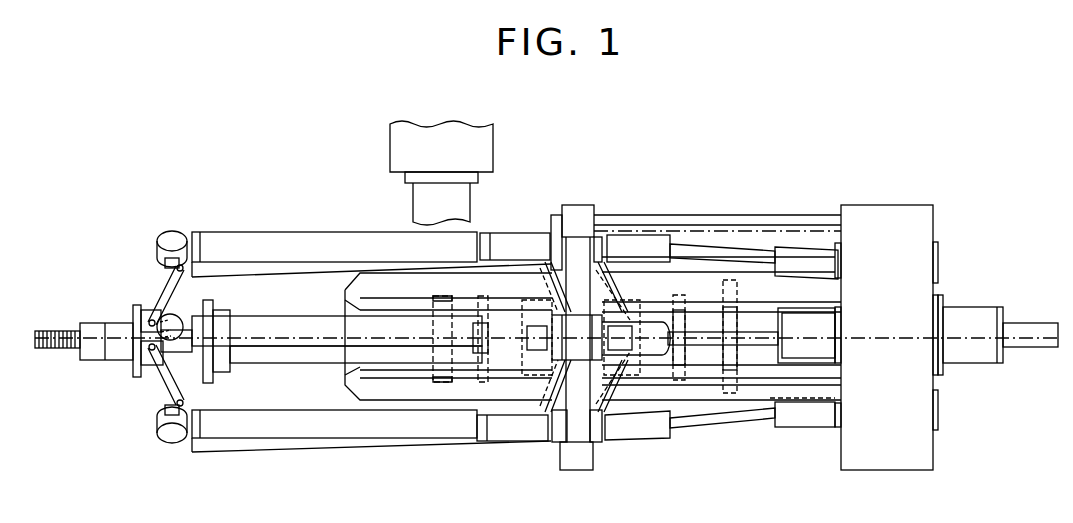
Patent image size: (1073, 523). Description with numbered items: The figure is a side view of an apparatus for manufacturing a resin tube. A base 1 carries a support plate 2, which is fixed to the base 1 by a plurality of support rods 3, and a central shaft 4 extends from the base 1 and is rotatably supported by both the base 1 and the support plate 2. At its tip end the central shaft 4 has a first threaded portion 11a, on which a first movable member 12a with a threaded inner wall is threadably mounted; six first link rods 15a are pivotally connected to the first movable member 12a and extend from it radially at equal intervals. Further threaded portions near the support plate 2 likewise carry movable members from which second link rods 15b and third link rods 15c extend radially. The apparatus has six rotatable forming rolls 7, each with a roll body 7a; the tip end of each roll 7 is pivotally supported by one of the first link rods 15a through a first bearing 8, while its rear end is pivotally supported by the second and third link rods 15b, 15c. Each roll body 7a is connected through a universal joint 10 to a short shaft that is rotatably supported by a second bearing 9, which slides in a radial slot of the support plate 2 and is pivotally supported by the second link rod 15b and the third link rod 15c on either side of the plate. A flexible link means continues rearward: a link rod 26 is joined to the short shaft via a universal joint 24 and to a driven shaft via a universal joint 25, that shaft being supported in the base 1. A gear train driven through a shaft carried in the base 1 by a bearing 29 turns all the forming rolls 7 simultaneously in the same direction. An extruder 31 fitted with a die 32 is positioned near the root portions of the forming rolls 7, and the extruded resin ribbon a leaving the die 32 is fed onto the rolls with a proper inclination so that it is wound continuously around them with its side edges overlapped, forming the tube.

The base 1 is at (880, 205).
The support plate 2 is at (580, 205).
The support rods 3 is at (685, 283).
The central shaft 4 is at (60, 350).
The rotatable forming rolls 7 is at (277, 245).
The roll body 7a is at (326, 240).
The first bearing 8 is at (172, 235).
The second bearing 9 is at (555, 215).
The universal joint 10 is at (504, 233).
The first threaded portion 11a is at (59, 330).
The first movable member 12a is at (134, 368).
The first link rods 15a is at (158, 292).
The second link rods 15b is at (546, 291).
The third link rods 15c is at (618, 269).
The universal joint 24 is at (650, 426).
The universal joint 25 is at (795, 416).
The link rod 26 is at (700, 422).
The bearing 29 is at (979, 365).
The extruder 31 is at (490, 131).
The die 32 is at (480, 177).
The extruded resin ribbon a is at (413, 210).